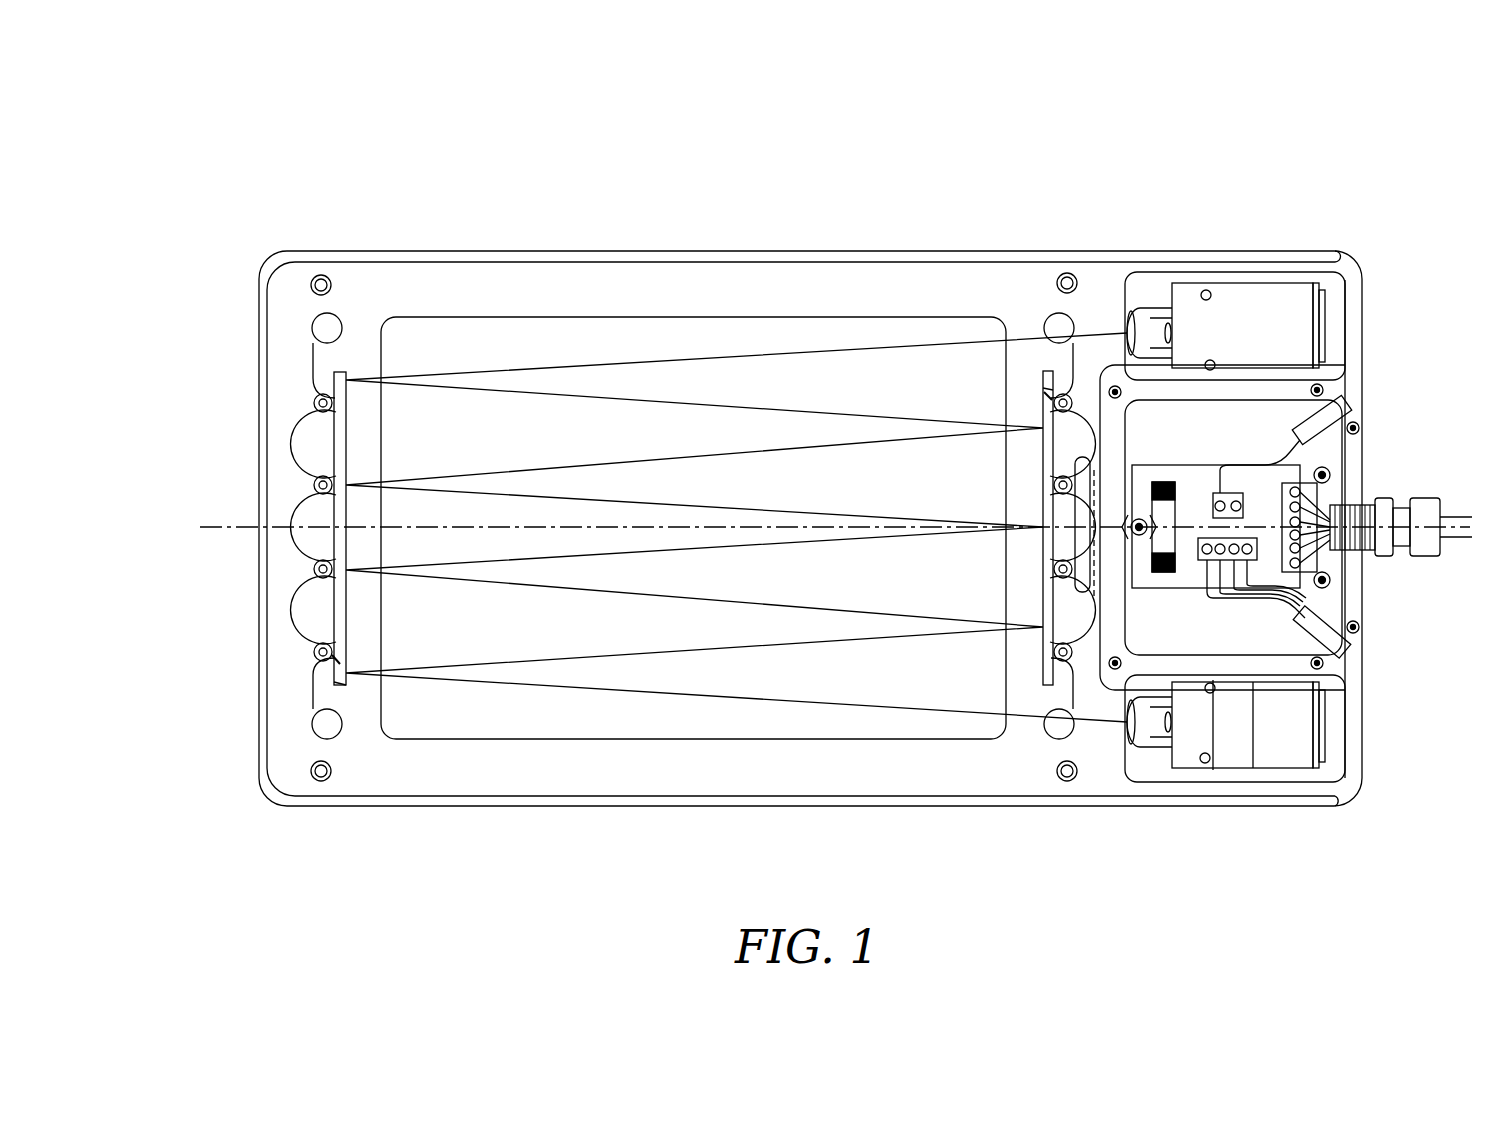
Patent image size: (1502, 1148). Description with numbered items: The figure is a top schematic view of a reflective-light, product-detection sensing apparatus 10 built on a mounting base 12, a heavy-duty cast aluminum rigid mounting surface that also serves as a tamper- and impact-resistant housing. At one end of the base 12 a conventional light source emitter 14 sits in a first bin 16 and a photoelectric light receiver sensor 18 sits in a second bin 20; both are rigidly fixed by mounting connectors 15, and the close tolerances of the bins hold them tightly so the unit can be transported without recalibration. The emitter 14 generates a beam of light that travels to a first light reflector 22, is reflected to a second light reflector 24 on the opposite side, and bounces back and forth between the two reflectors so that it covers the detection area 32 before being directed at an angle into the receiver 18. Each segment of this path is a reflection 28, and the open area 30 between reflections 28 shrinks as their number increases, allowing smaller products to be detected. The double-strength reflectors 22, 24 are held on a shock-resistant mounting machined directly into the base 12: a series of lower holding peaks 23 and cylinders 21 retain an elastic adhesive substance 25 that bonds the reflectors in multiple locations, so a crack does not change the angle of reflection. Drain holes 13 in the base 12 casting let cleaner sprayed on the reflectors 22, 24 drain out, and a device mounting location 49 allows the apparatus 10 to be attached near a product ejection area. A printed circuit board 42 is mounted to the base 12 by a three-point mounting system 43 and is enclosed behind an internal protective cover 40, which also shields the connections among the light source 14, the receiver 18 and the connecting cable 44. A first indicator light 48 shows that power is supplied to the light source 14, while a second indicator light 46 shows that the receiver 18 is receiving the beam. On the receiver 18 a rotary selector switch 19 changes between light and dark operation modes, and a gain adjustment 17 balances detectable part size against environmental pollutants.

The sensing apparatus 10 is at (908, 168).
The mounting base 12 is at (988, 806).
The drain holes 13 is at (313, 328).
The light source emitter 14 is at (1270, 290).
The mounting connectors 15 is at (1208, 290).
The first bin 16 is at (1352, 297).
The gain adjustment 17 is at (1213, 688).
The photoelectric light receiver sensor 18 is at (1345, 768).
The rotary selector switch 19 is at (1253, 684).
The second bin 20 is at (745, 352).
The cylinders 21 is at (327, 577).
The first light reflector 22 is at (330, 438).
The lower holding peaks 23 is at (337, 685).
The second light reflector 24 is at (1040, 625).
The elastic adhesive substance 25 is at (337, 660).
The reflection 28 is at (449, 375).
The open area 30 is at (635, 378).
The detection area 32 is at (622, 730).
The internal protective cover 40 is at (1277, 630).
The printed circuit board 42 is at (1303, 462).
The 3 point system 43 is at (1139, 518).
The connecting cable 44 is at (1450, 518).
The second indicator light 46 is at (1300, 737).
The first indicator light 48 is at (1320, 320).
The device mounting location 49 is at (318, 275).